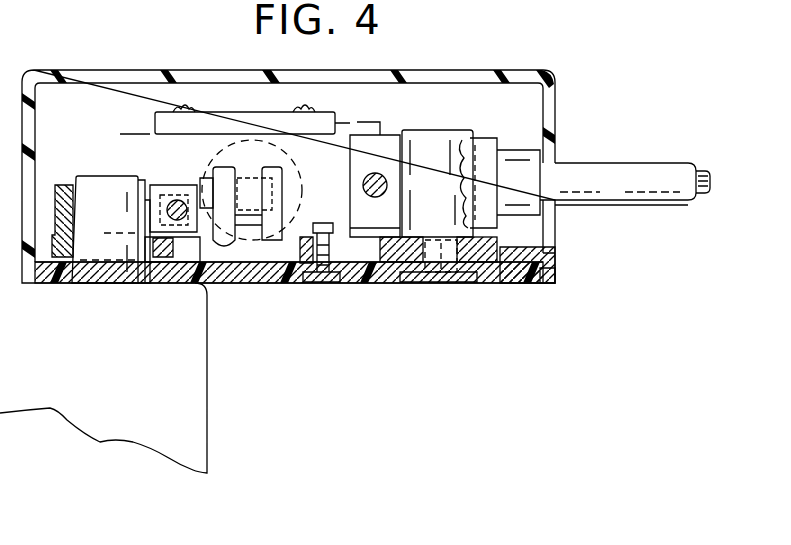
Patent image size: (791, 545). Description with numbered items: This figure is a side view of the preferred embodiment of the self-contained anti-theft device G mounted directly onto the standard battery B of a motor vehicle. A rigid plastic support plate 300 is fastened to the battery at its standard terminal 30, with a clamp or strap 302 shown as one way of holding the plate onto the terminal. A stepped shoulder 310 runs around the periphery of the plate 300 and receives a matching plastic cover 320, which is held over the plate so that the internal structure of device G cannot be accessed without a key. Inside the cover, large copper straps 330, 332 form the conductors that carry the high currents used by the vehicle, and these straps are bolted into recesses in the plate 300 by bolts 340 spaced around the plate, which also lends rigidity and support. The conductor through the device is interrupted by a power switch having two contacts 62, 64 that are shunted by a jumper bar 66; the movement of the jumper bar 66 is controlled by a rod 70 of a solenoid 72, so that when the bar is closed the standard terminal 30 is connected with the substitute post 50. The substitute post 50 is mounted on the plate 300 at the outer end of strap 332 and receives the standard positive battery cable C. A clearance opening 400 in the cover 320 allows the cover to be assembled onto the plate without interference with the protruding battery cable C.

The terminal 30 is at (100, 186).
The substitute post 50 is at (433, 140).
The contact 62 is at (224, 250).
The contact 64 is at (272, 243).
The jumper bar 66 is at (208, 175).
The rod 70 is at (312, 140).
The solenoid 72 is at (233, 152).
The support plate 300 is at (508, 278).
The clamp 302 is at (68, 178).
The stepped shoulder 310 is at (553, 255).
The cover 320 is at (128, 74).
The copper strap 330 is at (190, 250).
The copper strap 332 is at (388, 283).
The bolt 340 is at (323, 283).
The clearance opening 400 is at (547, 147).
The battery B is at (221, 410).
The battery cable C is at (663, 216).
The anti-theft device G is at (493, 54).